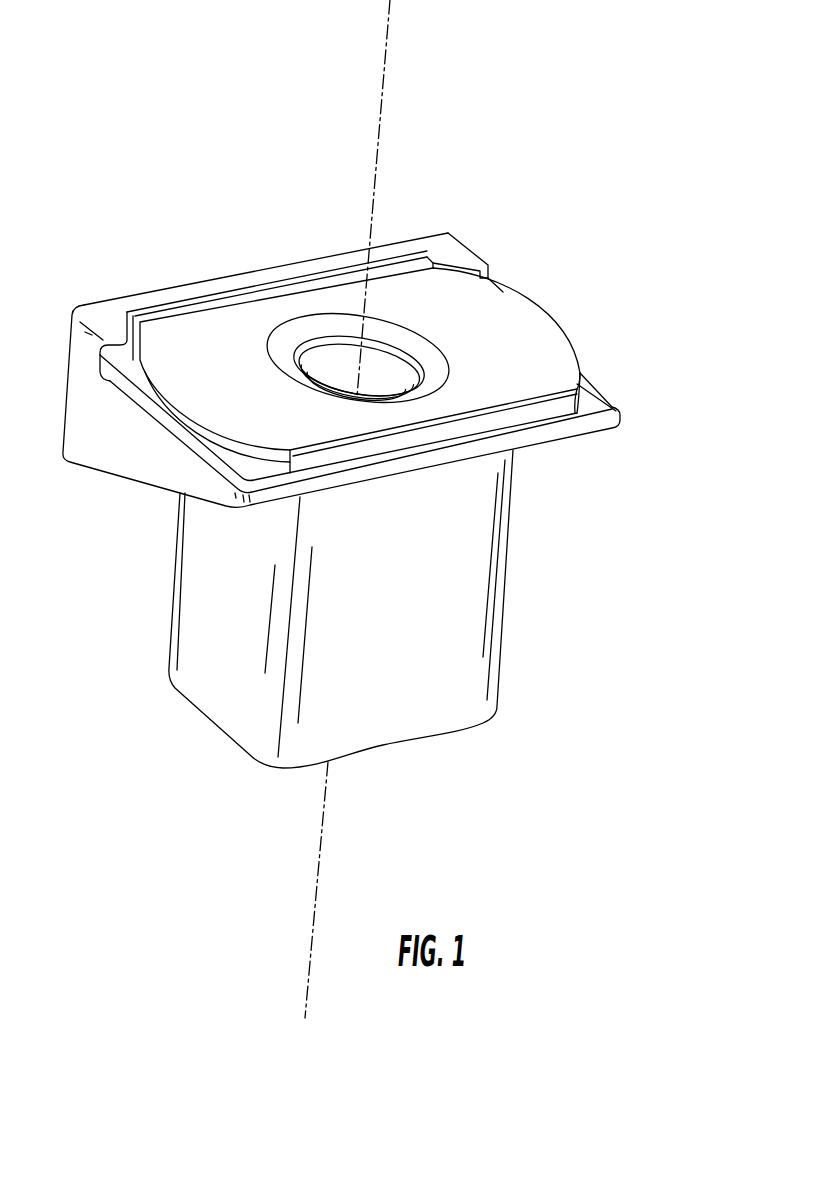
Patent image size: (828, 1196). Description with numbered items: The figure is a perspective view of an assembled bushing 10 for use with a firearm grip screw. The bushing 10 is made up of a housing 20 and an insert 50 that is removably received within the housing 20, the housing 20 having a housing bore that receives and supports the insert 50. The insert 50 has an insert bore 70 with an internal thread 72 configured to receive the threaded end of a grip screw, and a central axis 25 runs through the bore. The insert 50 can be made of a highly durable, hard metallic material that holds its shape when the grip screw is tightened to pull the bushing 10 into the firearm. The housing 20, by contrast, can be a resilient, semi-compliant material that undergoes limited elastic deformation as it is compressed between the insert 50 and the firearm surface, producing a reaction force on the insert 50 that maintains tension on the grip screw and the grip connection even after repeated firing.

The bushing 10 is at (667, 458).
The housing 20 is at (437, 607).
The central axis 25 is at (383, 78).
The insert 50 is at (502, 342).
The insert bore 70 is at (310, 304).
The internal thread 72 is at (393, 363).